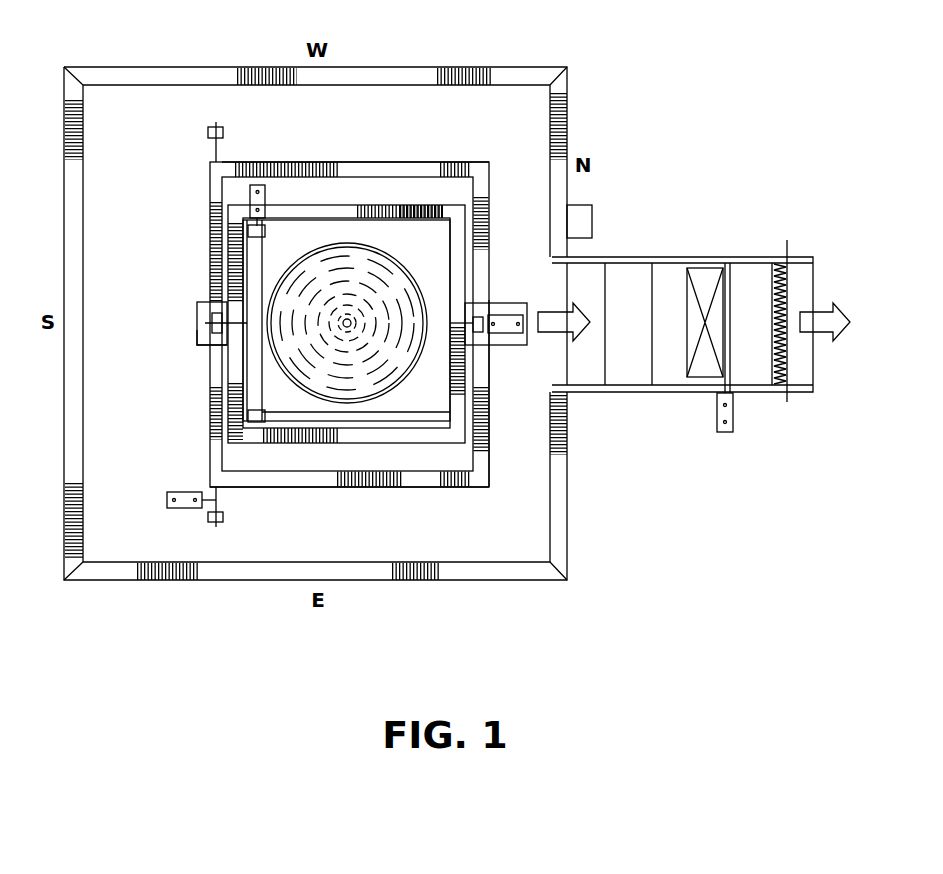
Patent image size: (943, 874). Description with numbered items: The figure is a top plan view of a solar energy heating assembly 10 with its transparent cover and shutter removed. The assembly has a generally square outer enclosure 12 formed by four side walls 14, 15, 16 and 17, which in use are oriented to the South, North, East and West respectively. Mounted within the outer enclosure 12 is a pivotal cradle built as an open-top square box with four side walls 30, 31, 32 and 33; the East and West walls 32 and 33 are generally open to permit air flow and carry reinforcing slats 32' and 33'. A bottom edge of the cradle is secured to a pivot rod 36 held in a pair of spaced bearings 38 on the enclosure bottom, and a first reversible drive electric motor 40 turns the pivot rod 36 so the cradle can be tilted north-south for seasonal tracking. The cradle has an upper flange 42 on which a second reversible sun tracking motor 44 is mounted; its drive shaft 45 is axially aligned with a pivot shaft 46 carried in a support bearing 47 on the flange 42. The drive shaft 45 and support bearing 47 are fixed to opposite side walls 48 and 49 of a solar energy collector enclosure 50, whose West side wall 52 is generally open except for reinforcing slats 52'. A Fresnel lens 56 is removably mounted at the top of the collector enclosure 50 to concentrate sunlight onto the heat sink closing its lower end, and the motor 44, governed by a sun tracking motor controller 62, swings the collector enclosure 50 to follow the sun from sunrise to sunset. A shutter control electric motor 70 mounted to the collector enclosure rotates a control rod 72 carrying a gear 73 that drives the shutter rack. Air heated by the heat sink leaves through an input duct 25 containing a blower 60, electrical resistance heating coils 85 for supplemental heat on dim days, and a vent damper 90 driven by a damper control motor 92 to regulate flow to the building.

The solar energy heating assembly 10 is at (186, 633).
The outer enclosure 12 is at (493, 582).
The side wall 14 is at (63, 455).
The side wall 15 is at (568, 500).
The side wall 16 is at (230, 581).
The side wall 17 is at (447, 67).
The input duct 25 is at (660, 257).
The side wall 30 is at (210, 410).
The side wall 31 is at (490, 420).
The side wall 32 is at (349, 518).
The reinforcing slats 32' is at (442, 509).
The side wall 33 is at (355, 125).
The reinforcing slats 33' is at (437, 133).
The pivot bar or rod 36 is at (218, 150).
The spaced bearings 38 is at (208, 132).
The first reversible drive electric motor 40 is at (178, 492).
The upper flange 42 is at (215, 222).
The second reversible drive electrical sun tracking motor 44 is at (503, 340).
The drive shaft 45 is at (472, 335).
The pivot shaft 46 is at (212, 318).
The support bearing 47 is at (197, 338).
The side wall 48 is at (247, 355).
The side wall 49 is at (462, 278).
The solar energy collector enclosure 50 is at (310, 198).
The side wall 52 is at (346, 310).
The reinforcing slats 52' is at (416, 194).
The Fresnel lens 56 is at (395, 262).
The blower or pump 60 is at (630, 372).
The sun tracking motor controller 62 is at (592, 222).
The shutter control electric motor 70 is at (248, 195).
The control rod 72 is at (248, 236).
The gear 73 is at (246, 416).
The electrical resistance heating wires or coils 85 is at (780, 388).
The vent damper 90 is at (705, 372).
The damper control motor 92 is at (727, 432).